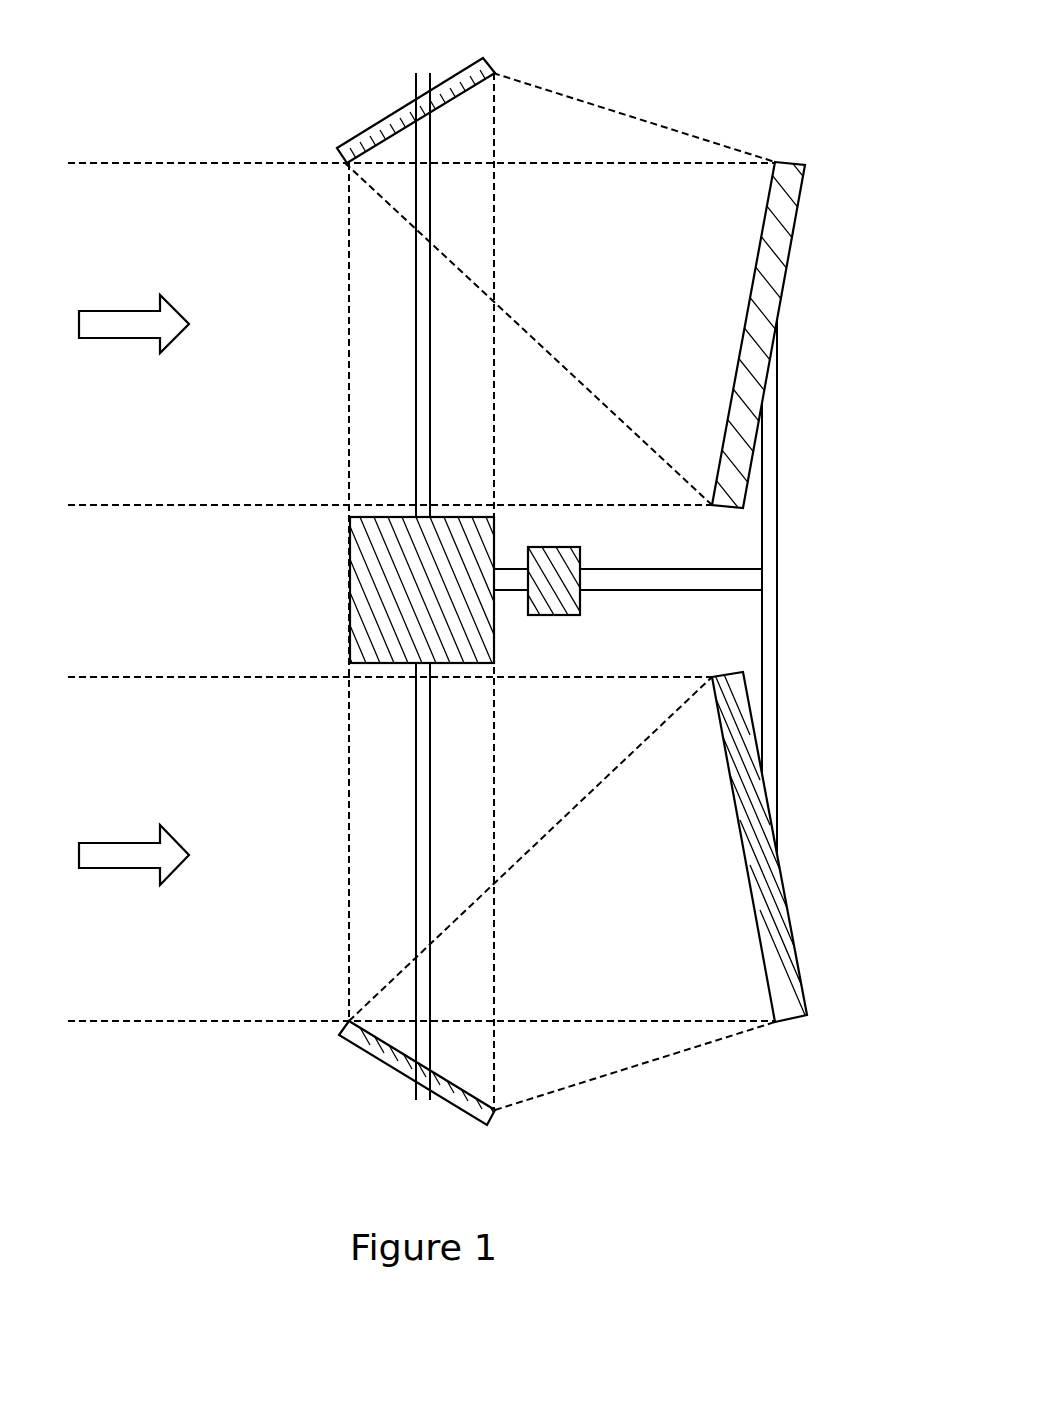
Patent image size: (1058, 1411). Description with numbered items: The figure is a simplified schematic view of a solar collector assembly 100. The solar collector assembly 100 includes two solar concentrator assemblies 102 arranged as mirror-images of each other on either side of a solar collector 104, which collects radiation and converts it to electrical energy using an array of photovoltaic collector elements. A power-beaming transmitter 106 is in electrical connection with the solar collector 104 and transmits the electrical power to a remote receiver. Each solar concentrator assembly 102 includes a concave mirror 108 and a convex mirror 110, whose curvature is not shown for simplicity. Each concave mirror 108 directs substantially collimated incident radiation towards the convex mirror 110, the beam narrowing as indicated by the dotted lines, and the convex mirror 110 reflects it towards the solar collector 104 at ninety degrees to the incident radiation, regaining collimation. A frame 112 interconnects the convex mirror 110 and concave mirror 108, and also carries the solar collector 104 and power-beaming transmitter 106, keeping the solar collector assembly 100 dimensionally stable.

The solar collector assembly 100 is at (234, 121).
The solar concentrator assembly 102 is at (727, 114).
The solar collector 104 is at (350, 580).
The power-beaming transmitter 106 is at (580, 603).
The concave mirror 108 is at (755, 322).
The convex mirror 110 is at (392, 125).
The frame 112 is at (778, 537).